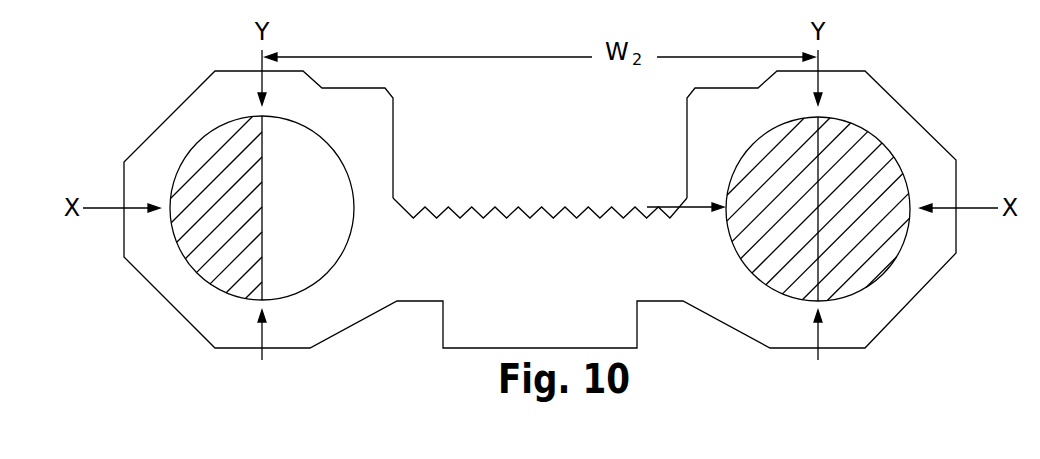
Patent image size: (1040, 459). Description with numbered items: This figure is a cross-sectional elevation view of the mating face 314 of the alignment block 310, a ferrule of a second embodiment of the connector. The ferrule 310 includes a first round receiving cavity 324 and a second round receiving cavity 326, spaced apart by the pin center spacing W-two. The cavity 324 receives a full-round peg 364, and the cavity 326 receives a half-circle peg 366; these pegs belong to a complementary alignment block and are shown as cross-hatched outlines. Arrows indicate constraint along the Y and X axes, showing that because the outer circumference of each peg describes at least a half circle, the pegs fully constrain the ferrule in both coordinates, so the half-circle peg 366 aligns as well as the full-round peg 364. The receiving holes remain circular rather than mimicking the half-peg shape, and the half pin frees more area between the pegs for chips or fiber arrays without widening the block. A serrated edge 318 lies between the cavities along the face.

The alignment block 310 is at (182, 64).
The mating face 314 is at (543, 277).
The serrated (toothed) edge 318 is at (568, 208).
The first round receiving cavity 324 is at (783, 275).
The second round receiving cavity 326 is at (290, 270).
The full-round peg 364 is at (873, 167).
The half-circle peg 366 is at (197, 188).